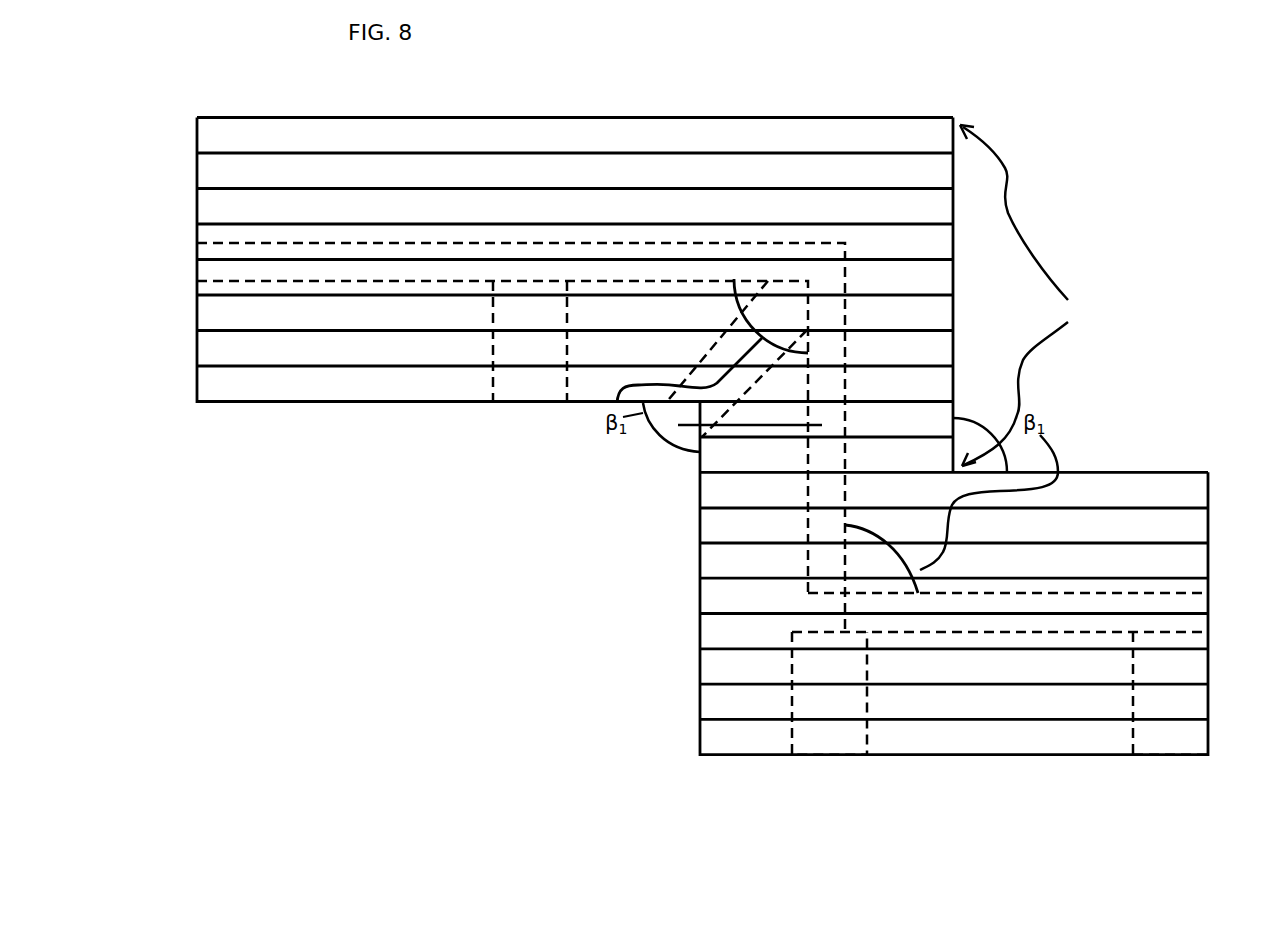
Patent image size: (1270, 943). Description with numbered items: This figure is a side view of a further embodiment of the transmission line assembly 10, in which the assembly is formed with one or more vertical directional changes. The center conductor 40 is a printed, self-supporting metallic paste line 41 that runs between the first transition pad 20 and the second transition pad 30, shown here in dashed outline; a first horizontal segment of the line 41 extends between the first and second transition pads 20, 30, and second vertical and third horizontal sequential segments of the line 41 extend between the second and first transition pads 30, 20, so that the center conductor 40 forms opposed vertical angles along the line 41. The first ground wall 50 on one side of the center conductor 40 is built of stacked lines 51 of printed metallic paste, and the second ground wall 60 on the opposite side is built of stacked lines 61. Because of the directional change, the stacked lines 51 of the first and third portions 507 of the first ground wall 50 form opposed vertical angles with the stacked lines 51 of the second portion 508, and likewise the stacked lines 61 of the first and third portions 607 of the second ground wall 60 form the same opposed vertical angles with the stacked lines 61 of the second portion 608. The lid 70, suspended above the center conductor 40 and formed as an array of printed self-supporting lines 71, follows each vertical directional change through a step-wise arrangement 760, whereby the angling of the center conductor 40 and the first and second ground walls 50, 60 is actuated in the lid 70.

The transmission line assembly 10 is at (1124, 173).
The first transition pad 20 is at (490, 380).
The second transition pad 30 is at (792, 666).
The center conductor 40 is at (807, 525).
The line 41 is at (738, 423).
The first ground wall 50 is at (700, 755).
The stacked lines 51 is at (438, 177).
The second ground wall 60 is at (929, 755).
The stacked lines 61 is at (476, 205).
The lid 70 is at (955, 115).
The lines 71 is at (745, 117).
The first and third portions 507 is at (303, 380).
The second portion 508 is at (718, 492).
The first and third portions 607 is at (702, 472).
The second portion 608 is at (742, 463).
The step-wise arrangement 760 is at (1035, 295).